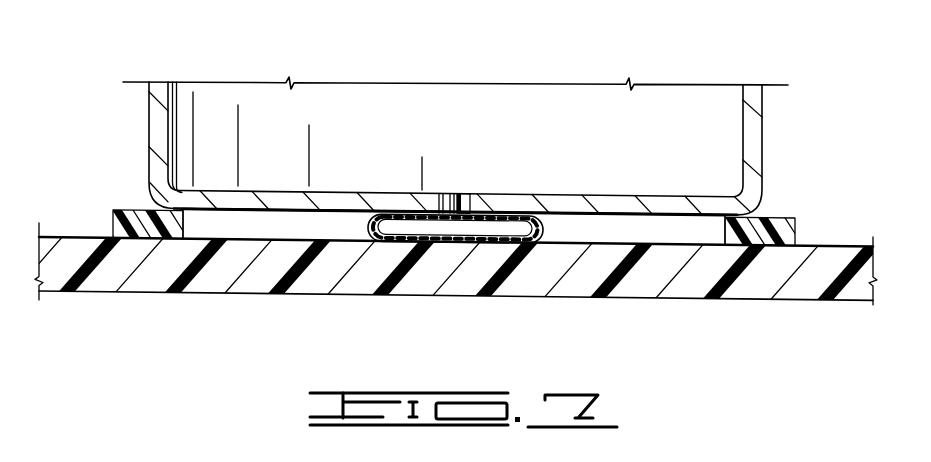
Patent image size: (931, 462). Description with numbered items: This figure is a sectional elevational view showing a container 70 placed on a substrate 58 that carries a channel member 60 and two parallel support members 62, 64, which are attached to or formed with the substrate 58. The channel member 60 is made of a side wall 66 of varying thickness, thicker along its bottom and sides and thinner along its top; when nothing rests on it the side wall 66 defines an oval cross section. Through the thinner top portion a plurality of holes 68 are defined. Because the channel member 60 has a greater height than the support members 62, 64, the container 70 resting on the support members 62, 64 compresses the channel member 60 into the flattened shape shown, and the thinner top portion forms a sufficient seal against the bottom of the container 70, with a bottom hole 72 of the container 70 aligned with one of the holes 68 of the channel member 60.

The substrate 58 is at (638, 288).
The channel member 60 is at (545, 229).
The support member 62 is at (134, 209).
The support member 64 is at (777, 217).
The side wall 66 is at (367, 222).
The holes 68 is at (457, 211).
The container 70 is at (777, 145).
The bottom hole 72 is at (462, 198).